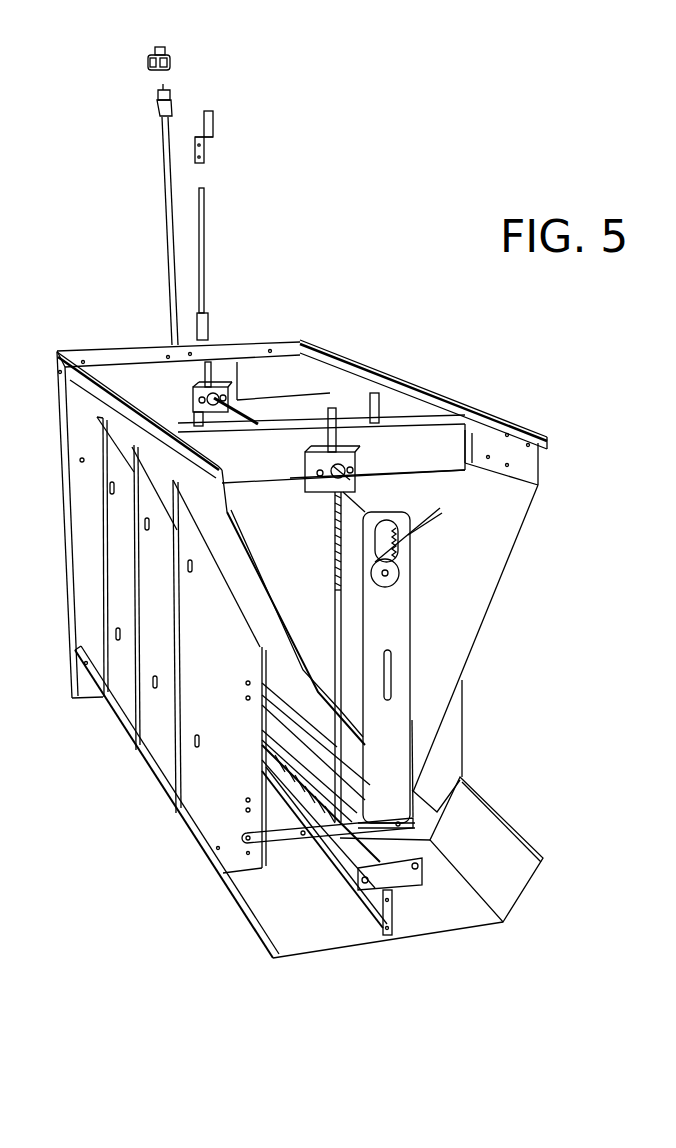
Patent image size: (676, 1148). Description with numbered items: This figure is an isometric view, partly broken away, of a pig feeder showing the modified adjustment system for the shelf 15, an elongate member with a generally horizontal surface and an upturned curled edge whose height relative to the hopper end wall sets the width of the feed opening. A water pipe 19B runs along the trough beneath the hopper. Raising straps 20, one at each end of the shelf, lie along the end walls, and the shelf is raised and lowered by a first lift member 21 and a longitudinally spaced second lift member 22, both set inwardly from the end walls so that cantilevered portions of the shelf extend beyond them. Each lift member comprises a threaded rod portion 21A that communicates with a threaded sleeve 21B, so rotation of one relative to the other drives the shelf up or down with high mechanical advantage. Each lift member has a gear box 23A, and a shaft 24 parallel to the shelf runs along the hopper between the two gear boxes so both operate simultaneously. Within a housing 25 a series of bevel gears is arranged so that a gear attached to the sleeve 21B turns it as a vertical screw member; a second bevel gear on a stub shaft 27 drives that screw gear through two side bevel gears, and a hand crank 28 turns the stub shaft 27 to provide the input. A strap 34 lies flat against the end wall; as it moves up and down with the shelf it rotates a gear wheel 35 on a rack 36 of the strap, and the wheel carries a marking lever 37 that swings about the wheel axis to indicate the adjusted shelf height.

The shelf 15 is at (323, 780).
The pipe 19B is at (332, 850).
The straps 20 is at (400, 438).
The first lift member 21 is at (240, 505).
The threaded rod portion 21A is at (343, 642).
The threaded sleeve 21B is at (337, 503).
The second lift member 22 is at (332, 624).
The gear box 23A is at (192, 386).
The shaft 24 is at (240, 408).
The housing 25 is at (358, 460).
The stub shaft 27 is at (212, 383).
The hand crank 28 is at (323, 440).
The strap 34 is at (395, 735).
The gear wheel 35 is at (400, 572).
The rack 36 is at (408, 543).
The marking lever 37 is at (433, 517).